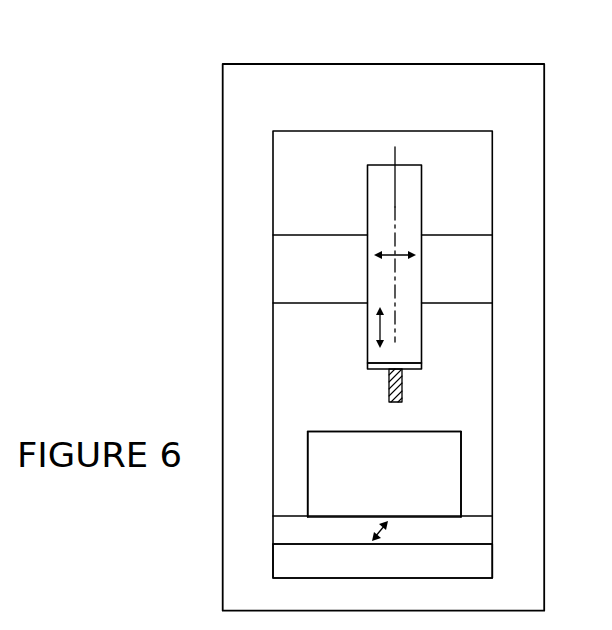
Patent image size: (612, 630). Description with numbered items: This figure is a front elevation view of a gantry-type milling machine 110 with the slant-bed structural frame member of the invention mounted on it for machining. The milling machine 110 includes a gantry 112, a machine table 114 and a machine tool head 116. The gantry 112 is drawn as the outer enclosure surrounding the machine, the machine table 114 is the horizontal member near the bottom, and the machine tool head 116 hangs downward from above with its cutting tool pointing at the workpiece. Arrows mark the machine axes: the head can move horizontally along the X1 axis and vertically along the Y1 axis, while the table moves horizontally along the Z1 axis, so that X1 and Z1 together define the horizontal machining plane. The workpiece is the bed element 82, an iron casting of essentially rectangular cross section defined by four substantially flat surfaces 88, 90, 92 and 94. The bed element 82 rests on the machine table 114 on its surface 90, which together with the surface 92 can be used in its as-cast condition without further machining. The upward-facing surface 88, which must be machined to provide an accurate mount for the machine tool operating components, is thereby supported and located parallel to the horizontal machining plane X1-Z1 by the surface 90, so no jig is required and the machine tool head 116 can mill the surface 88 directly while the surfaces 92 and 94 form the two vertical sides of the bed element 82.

The gantry-type milling machine 110 is at (443, 38).
The gantry 112 is at (233, 151).
The machine table 114 is at (287, 530).
The machine tool head 116 is at (378, 197).
The bed element 82 is at (448, 443).
The surface 88 is at (352, 432).
The surface 90 is at (443, 517).
The surface 92 is at (306, 455).
The surface 94 is at (462, 472).
The X1 axis X1 is at (387, 258).
The Y1 axis Y1 is at (378, 328).
The Z1 axis Z1 is at (398, 531).